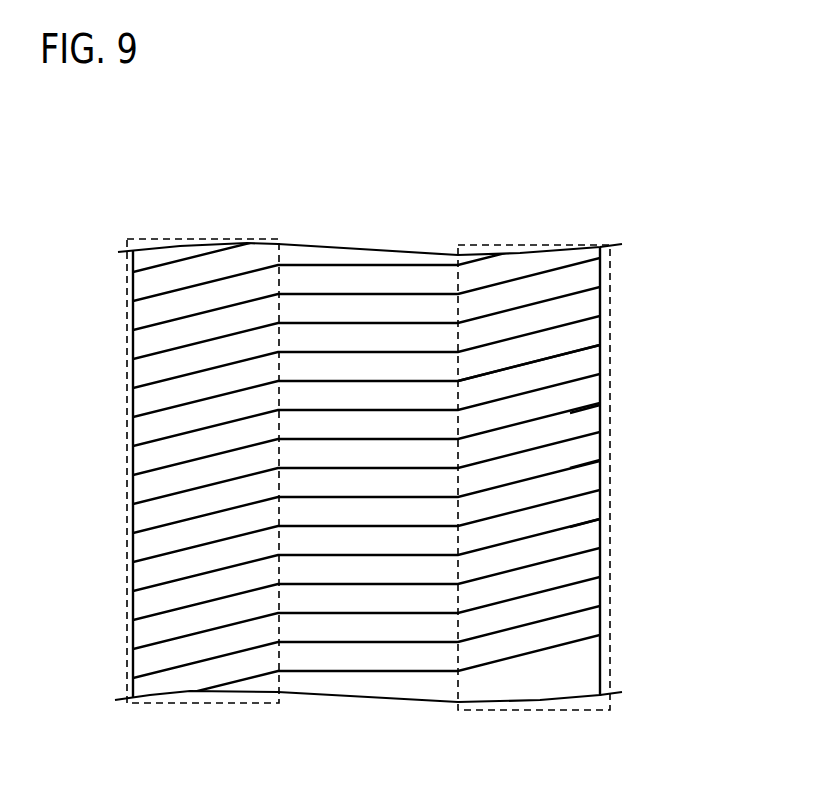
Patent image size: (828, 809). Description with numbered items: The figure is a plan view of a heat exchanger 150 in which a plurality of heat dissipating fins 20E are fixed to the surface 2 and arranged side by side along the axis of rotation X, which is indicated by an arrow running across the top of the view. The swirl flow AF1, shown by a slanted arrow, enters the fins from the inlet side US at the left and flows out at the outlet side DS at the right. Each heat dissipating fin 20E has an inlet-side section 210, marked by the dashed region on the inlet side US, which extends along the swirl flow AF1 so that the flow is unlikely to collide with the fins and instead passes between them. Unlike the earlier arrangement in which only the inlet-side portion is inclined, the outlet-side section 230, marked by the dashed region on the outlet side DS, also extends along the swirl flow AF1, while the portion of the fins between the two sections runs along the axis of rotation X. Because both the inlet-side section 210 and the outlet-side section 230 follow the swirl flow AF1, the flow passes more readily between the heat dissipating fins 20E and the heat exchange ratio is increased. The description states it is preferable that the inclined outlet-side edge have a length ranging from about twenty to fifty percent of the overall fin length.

The heat sink 150 is at (350, 222).
The inlet-side section 210 is at (128, 423).
The outlet-side section 230 is at (610, 328).
The surface 2 is at (573, 367).
The heat dissipating fins 20E is at (570, 412).
The swirl flow AF1 is at (205, 470).
The axis of rotation X is at (93, 167).
The inlet side US is at (52, 268).
The outlet side DS is at (720, 268).